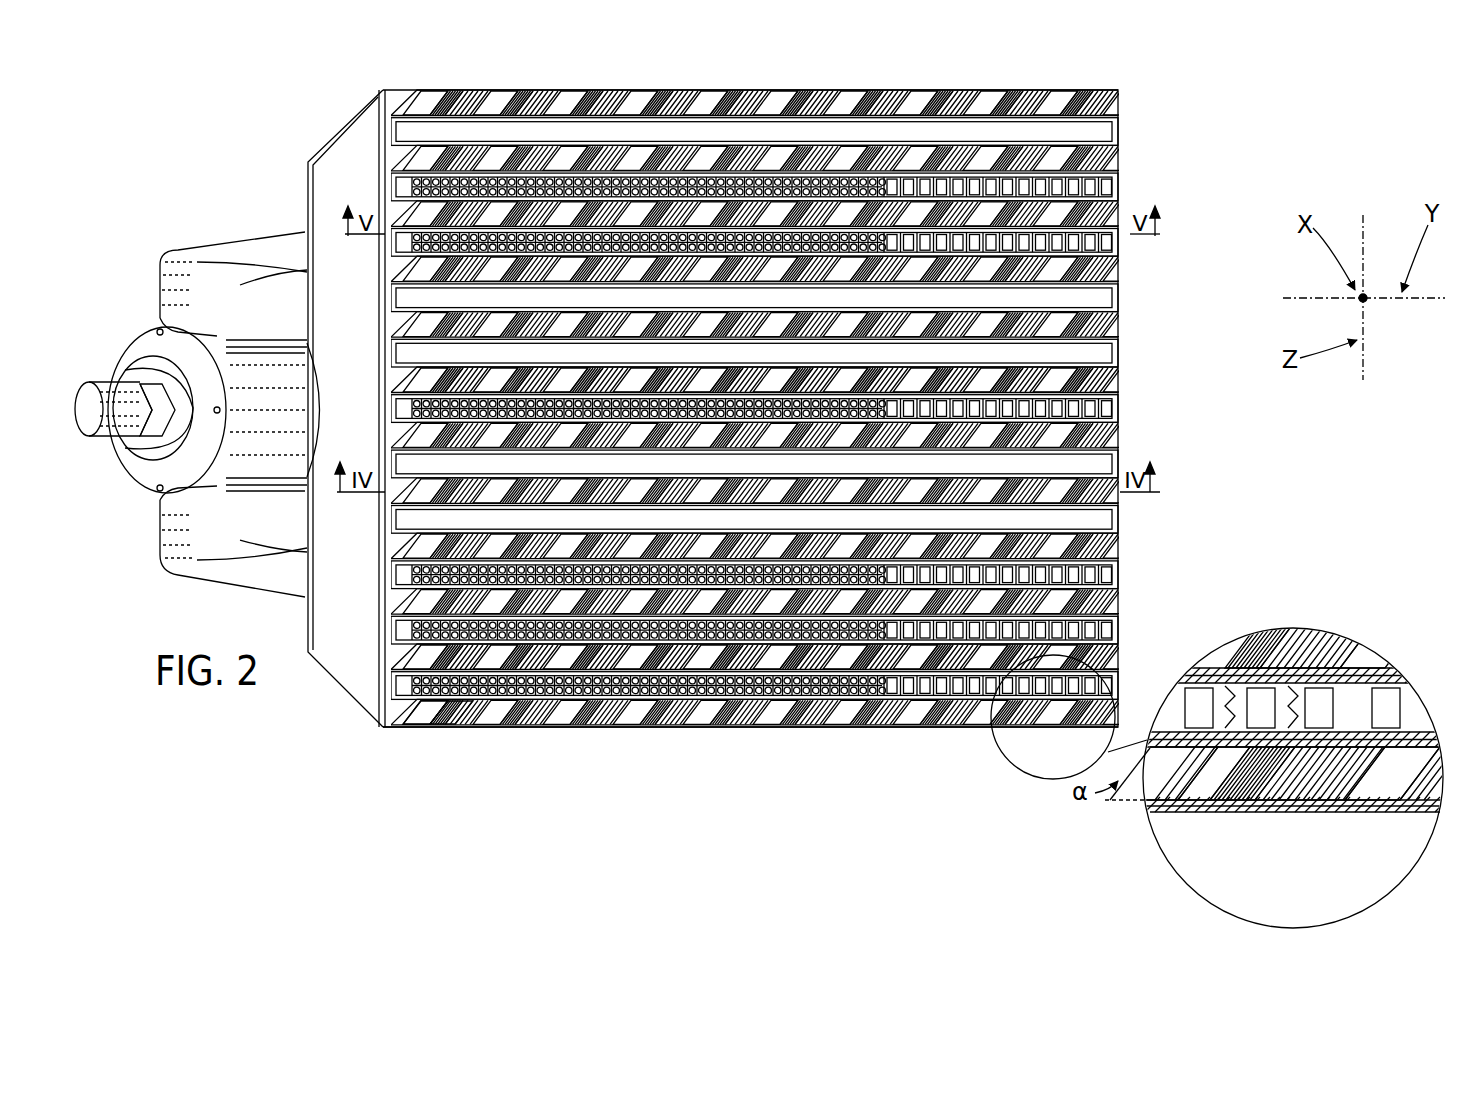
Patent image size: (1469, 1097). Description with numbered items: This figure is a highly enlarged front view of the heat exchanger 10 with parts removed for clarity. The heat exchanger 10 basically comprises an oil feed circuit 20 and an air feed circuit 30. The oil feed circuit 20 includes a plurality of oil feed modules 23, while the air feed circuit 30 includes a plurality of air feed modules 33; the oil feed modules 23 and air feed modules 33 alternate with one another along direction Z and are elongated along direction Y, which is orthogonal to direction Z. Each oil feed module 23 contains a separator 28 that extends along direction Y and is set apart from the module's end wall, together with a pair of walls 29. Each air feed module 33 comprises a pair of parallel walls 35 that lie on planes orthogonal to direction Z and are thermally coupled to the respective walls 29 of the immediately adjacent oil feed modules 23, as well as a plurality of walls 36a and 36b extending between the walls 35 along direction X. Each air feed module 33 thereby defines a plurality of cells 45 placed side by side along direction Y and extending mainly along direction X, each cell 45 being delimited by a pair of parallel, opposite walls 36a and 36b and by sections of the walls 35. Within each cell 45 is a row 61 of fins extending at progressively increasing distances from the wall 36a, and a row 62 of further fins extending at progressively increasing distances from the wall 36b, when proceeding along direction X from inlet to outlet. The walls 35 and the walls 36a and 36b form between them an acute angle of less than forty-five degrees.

The heat exchanger 10 is at (272, 152).
The oil feed circuit 20 is at (1070, 198).
The oil feed module 23 is at (393, 131).
The separator 28 is at (412, 188).
The wall 29 is at (1110, 172).
The air feed circuit 30 is at (825, 729).
The air feed module 33 is at (393, 103).
The wall 35 is at (1085, 91).
The wall 36a is at (408, 714).
The wall 36b is at (467, 729).
The cell 45 is at (655, 735).
The row of fins 61 is at (1258, 630).
The row of further fins 62 is at (1322, 628).